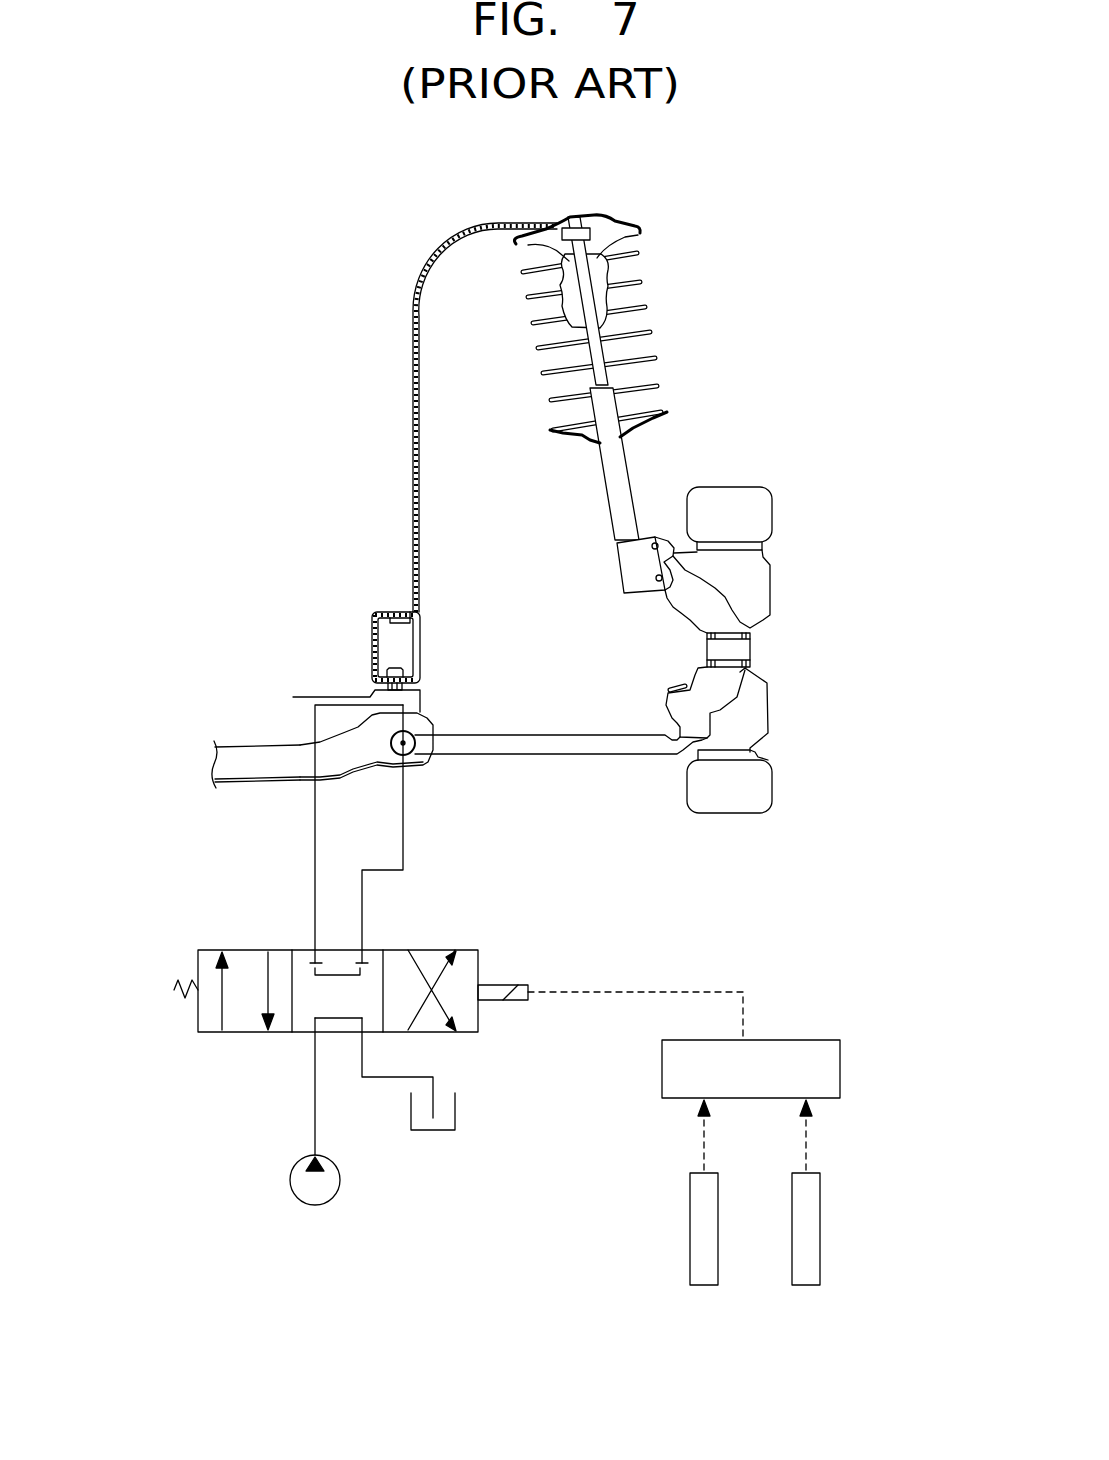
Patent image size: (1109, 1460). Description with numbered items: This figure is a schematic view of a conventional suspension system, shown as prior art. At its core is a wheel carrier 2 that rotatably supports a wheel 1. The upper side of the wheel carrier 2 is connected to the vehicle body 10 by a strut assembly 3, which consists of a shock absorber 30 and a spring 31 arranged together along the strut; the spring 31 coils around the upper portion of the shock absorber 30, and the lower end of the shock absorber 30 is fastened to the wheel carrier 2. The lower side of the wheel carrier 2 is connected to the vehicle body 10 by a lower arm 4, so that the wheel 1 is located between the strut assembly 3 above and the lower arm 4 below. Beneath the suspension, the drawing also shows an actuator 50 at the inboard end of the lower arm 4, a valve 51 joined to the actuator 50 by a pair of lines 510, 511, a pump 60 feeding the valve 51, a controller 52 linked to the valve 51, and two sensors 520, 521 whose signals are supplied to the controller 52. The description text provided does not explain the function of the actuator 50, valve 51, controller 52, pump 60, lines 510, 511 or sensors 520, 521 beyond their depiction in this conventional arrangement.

The wheel 1 is at (770, 520).
The wheel carrier 2 is at (770, 600).
The strut assembly 3 is at (656, 404).
The lower arm 4 is at (583, 738).
The vehicle body 10 is at (413, 442).
The shock absorber 30 is at (632, 470).
The spring 31 is at (638, 305).
The actuator 50 is at (415, 740).
The control valve 51 is at (240, 1033).
The controller 52 is at (840, 1078).
The pump 60 is at (315, 1205).
The hydraulic line 510 is at (315, 852).
The hydraulic line 511 is at (403, 848).
The sensor 520 is at (704, 1286).
The sensor 521 is at (806, 1286).